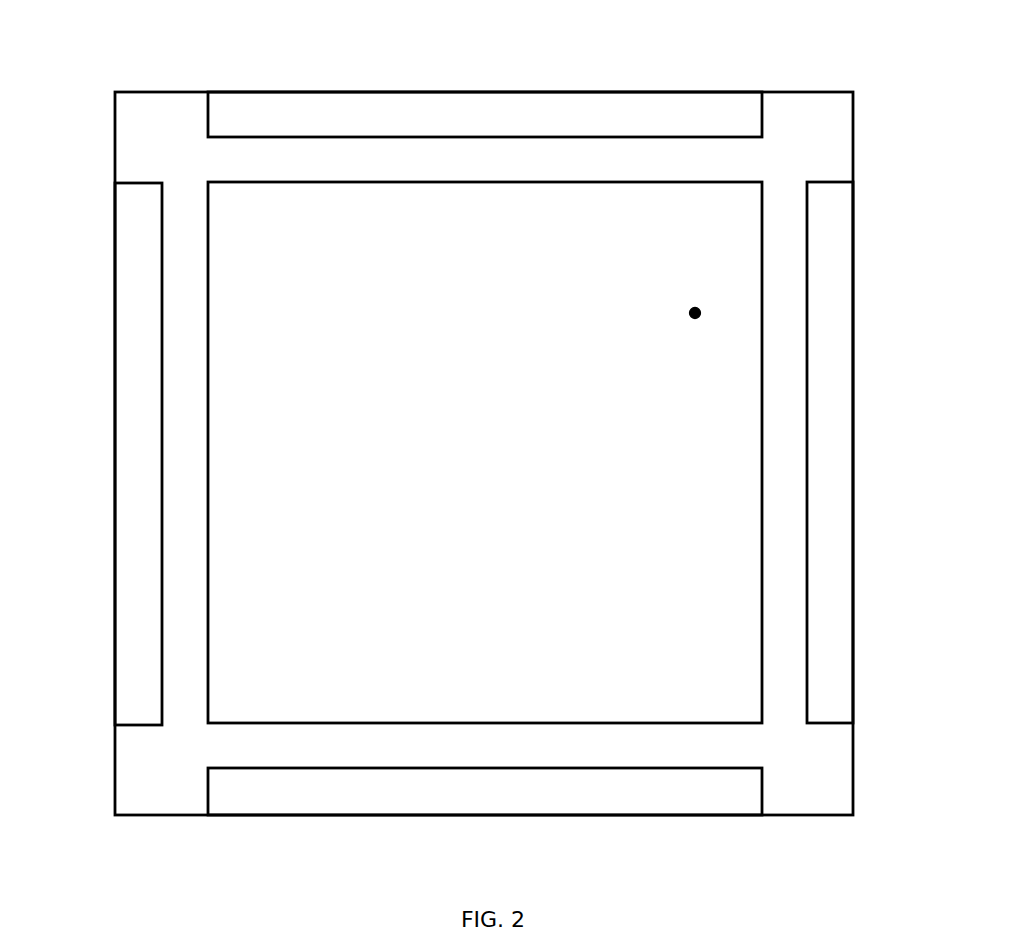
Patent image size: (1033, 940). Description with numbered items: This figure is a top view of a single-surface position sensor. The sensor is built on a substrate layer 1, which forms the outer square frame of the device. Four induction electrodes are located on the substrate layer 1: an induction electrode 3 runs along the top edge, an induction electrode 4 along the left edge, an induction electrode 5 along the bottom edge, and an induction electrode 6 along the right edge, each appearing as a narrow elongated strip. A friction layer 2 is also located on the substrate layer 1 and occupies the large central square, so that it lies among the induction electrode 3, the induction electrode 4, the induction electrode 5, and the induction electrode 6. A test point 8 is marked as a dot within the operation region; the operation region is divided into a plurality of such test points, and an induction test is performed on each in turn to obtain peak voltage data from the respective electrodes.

The substrate layer 1 is at (815, 763).
The friction layer 2 is at (248, 212).
The induction electrode 3 is at (675, 100).
The induction electrode 4 is at (140, 360).
The induction electrode 5 is at (235, 791).
The induction electrode 6 is at (843, 372).
The test point 8 is at (695, 313).